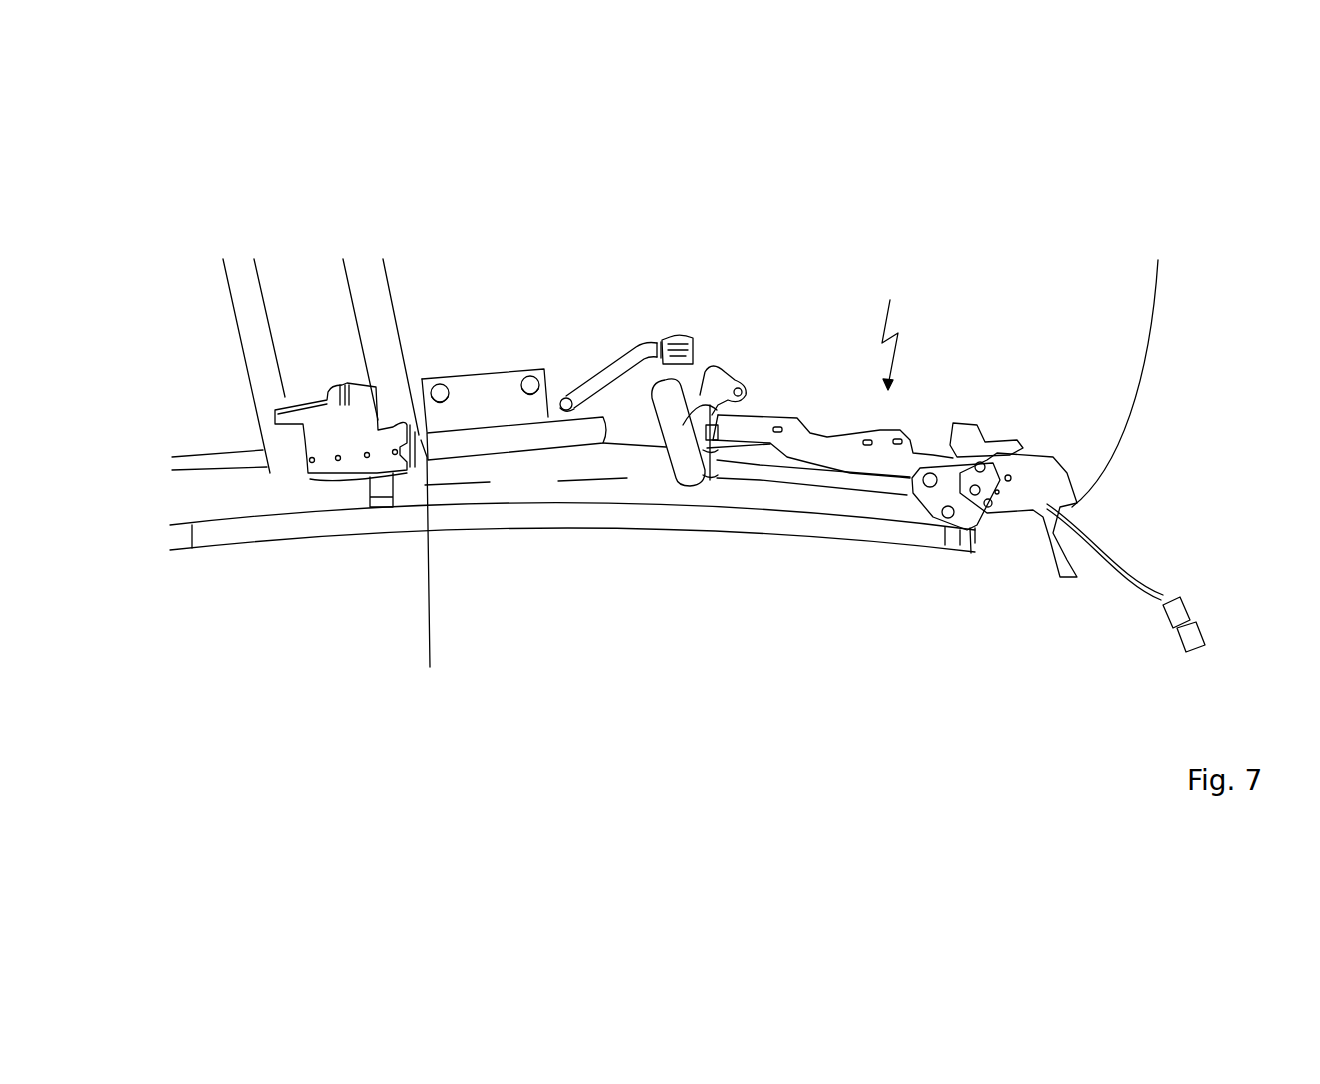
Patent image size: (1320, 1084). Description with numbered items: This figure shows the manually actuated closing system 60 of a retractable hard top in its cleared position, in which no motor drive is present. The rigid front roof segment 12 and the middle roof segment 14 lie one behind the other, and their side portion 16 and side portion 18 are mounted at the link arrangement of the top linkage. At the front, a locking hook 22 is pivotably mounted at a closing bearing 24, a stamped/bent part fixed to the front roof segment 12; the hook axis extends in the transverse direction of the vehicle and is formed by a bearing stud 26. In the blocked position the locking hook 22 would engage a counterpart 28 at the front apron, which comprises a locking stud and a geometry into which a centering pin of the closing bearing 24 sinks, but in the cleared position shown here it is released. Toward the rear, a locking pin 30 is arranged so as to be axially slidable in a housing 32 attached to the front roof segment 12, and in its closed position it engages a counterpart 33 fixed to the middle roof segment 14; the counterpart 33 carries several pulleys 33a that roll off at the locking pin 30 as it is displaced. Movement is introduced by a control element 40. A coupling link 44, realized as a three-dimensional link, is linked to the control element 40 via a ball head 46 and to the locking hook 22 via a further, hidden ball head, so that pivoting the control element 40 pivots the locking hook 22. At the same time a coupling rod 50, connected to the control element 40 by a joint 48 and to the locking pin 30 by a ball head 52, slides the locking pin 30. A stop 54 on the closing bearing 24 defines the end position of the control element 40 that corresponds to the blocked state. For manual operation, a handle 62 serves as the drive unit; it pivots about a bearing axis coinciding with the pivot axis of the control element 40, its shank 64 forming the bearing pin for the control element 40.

The front roof segment 12 is at (803, 349).
The middle roof segment 14 is at (172, 407).
The side portion of the front roof segment 16 is at (560, 518).
The side portion of the middle roof segment 18 is at (222, 537).
The front locking hook 22 is at (935, 503).
The closing bearing 24 is at (970, 440).
The bearing stud 26 is at (987, 460).
The counterpart 28 is at (1020, 497).
The locking pin 30 is at (429, 566).
The housing 32 is at (478, 437).
The counterpart 33 is at (322, 450).
The pulleys 33a is at (393, 507).
The control element 40 is at (692, 397).
The coupling link 44 is at (862, 483).
The ball head 46 is at (703, 445).
The joint 48 is at (682, 337).
The coupling rod 50 is at (592, 390).
The ball head 52 is at (567, 400).
The stop 54 is at (720, 415).
The closing system 60 is at (893, 328).
The handle 62 is at (675, 428).
The shank 64 is at (708, 430).